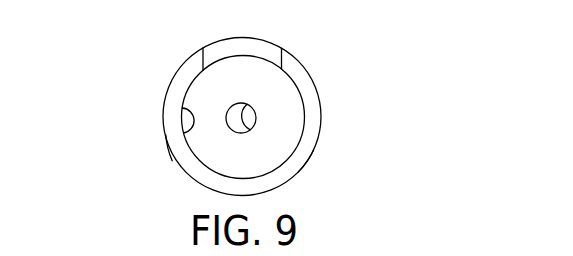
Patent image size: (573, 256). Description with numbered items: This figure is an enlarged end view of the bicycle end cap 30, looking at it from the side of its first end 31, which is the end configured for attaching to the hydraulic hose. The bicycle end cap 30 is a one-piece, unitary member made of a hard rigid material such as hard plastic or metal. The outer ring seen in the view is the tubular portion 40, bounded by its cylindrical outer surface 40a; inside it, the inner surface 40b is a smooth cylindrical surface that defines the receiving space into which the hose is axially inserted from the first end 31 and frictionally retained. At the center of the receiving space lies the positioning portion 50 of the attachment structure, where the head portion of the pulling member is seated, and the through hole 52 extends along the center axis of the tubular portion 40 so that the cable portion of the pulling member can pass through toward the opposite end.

The bicycle end cap 30 is at (222, 112).
The tubular portion 40 is at (301, 53).
The cylindrical outer surface 40a is at (173, 153).
The inner surface 40b is at (182, 110).
The positioning portion 50 is at (270, 97).
The through hole 52 is at (256, 124).
The first end 31 is at (297, 156).